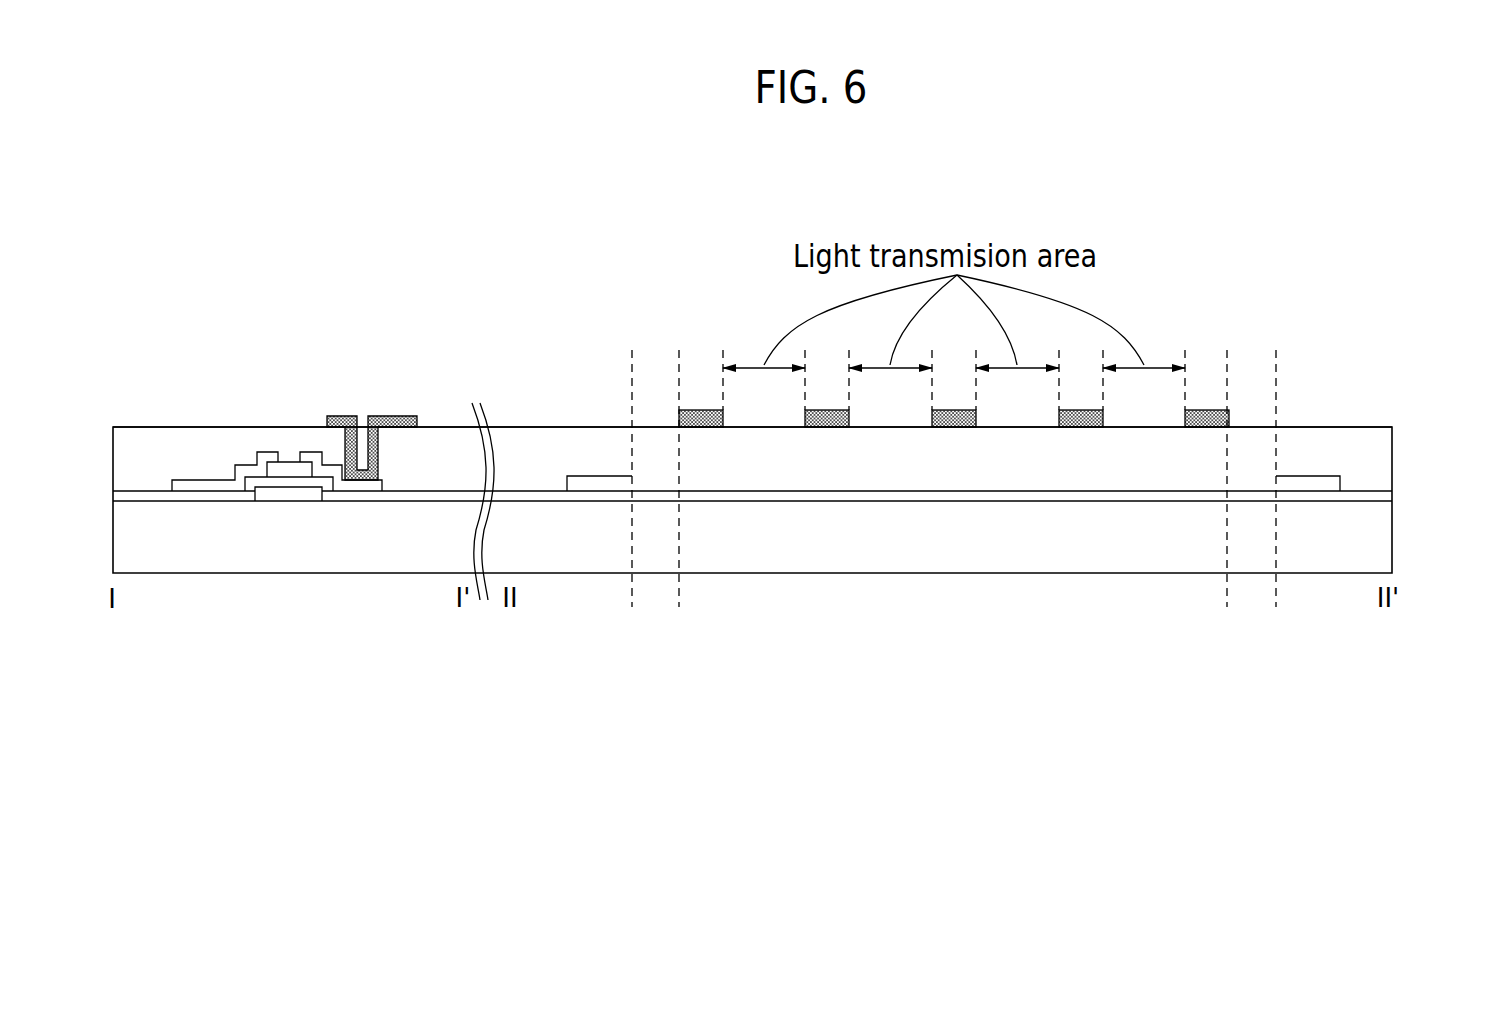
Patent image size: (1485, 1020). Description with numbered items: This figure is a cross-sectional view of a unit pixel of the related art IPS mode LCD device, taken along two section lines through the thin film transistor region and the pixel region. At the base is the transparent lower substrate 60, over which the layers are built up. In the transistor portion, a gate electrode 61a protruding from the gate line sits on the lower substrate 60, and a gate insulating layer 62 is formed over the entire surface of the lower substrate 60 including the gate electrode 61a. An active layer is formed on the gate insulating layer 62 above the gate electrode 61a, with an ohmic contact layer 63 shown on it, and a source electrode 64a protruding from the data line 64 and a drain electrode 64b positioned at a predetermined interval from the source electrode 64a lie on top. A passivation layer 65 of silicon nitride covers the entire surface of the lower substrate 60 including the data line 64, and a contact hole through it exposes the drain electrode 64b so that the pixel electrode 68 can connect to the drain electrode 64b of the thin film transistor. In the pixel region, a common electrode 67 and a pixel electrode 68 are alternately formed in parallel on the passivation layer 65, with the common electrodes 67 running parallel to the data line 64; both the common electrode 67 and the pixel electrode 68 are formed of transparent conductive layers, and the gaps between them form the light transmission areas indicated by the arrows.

The lower substrate 60 is at (955, 567).
The gate electrode 61a is at (287, 497).
The gate insulating layer 62 is at (363, 497).
The ohmic contact layer 63 is at (288, 467).
The data line 64 is at (600, 480).
The source electrode 64a is at (200, 485).
The drain electrode 64b is at (309, 458).
The passivation layer 65 is at (1383, 452).
The common electrode 67 is at (703, 428).
The pixel electrode 68 is at (390, 415).